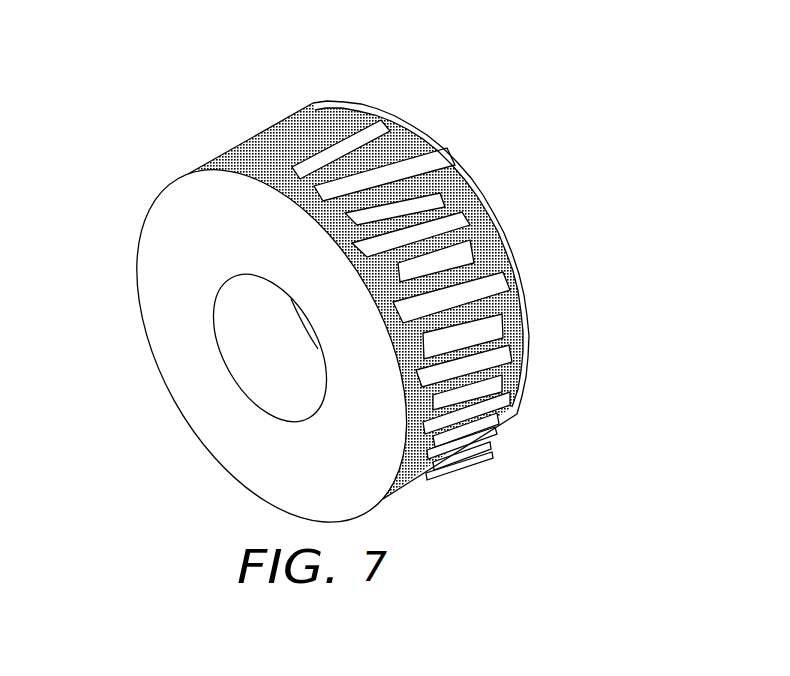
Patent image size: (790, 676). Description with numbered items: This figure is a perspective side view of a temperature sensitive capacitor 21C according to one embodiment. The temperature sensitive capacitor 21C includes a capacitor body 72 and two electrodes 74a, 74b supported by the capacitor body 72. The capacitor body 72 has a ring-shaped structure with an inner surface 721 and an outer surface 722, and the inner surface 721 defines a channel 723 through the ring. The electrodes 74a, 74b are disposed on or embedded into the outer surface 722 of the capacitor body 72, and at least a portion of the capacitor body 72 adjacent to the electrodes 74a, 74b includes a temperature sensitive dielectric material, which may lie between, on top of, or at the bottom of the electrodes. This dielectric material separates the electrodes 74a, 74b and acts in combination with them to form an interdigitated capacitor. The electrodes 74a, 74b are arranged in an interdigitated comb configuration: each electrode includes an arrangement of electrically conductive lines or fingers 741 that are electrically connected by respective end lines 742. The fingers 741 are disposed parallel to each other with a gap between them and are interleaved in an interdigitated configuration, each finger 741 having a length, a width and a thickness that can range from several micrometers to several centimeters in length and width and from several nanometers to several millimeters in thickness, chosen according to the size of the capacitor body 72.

The capacitor body 72 is at (158, 278).
The inner surface 721 is at (232, 337).
The outer surface 722 is at (251, 138).
The channel 723 is at (307, 330).
The fingers 741 is at (338, 147).
The end lines 742 is at (408, 142).
The electrode 74a is at (458, 237).
The electrode 74b is at (378, 242).
The temperature sensitive capacitor 21C is at (579, 138).